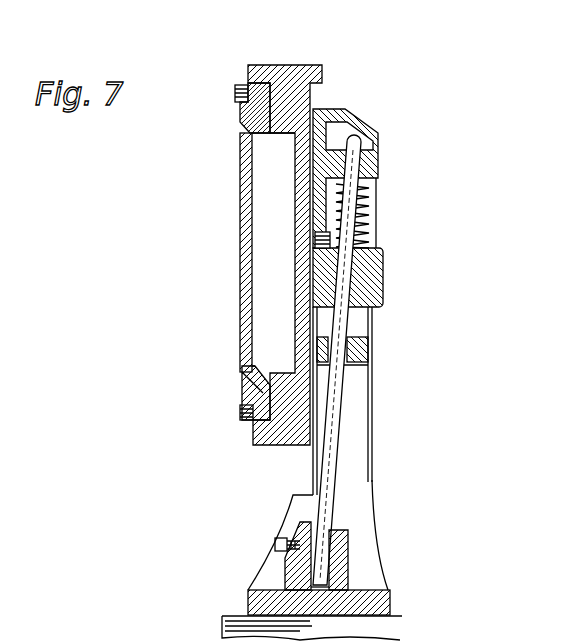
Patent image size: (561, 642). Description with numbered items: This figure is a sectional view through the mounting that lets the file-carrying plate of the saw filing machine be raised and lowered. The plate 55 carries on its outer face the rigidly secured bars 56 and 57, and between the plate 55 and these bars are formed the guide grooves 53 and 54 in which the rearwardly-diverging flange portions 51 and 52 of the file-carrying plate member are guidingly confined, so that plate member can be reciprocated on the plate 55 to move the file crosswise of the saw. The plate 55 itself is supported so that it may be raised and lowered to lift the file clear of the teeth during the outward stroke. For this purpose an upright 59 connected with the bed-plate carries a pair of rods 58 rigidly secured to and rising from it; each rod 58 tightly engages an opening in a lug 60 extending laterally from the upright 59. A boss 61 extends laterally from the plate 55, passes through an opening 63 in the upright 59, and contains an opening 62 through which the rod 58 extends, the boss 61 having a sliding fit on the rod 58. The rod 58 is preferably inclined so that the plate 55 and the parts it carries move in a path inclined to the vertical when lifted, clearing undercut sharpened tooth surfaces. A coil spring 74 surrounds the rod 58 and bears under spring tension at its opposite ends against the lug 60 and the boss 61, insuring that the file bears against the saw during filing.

The flange portion 51 is at (242, 143).
The flange portion 52 is at (258, 366).
The guide groove 53 is at (250, 127).
The guide groove 54 is at (242, 380).
The plate 55 is at (292, 77).
The bar 56 is at (240, 99).
The bar 57 is at (242, 403).
The rod 58 is at (338, 447).
The upright 59 is at (372, 415).
The lug 60 is at (380, 162).
The boss 61 is at (383, 262).
The opening 62 is at (368, 247).
The opening 63 is at (318, 240).
The coil spring 74 is at (372, 215).